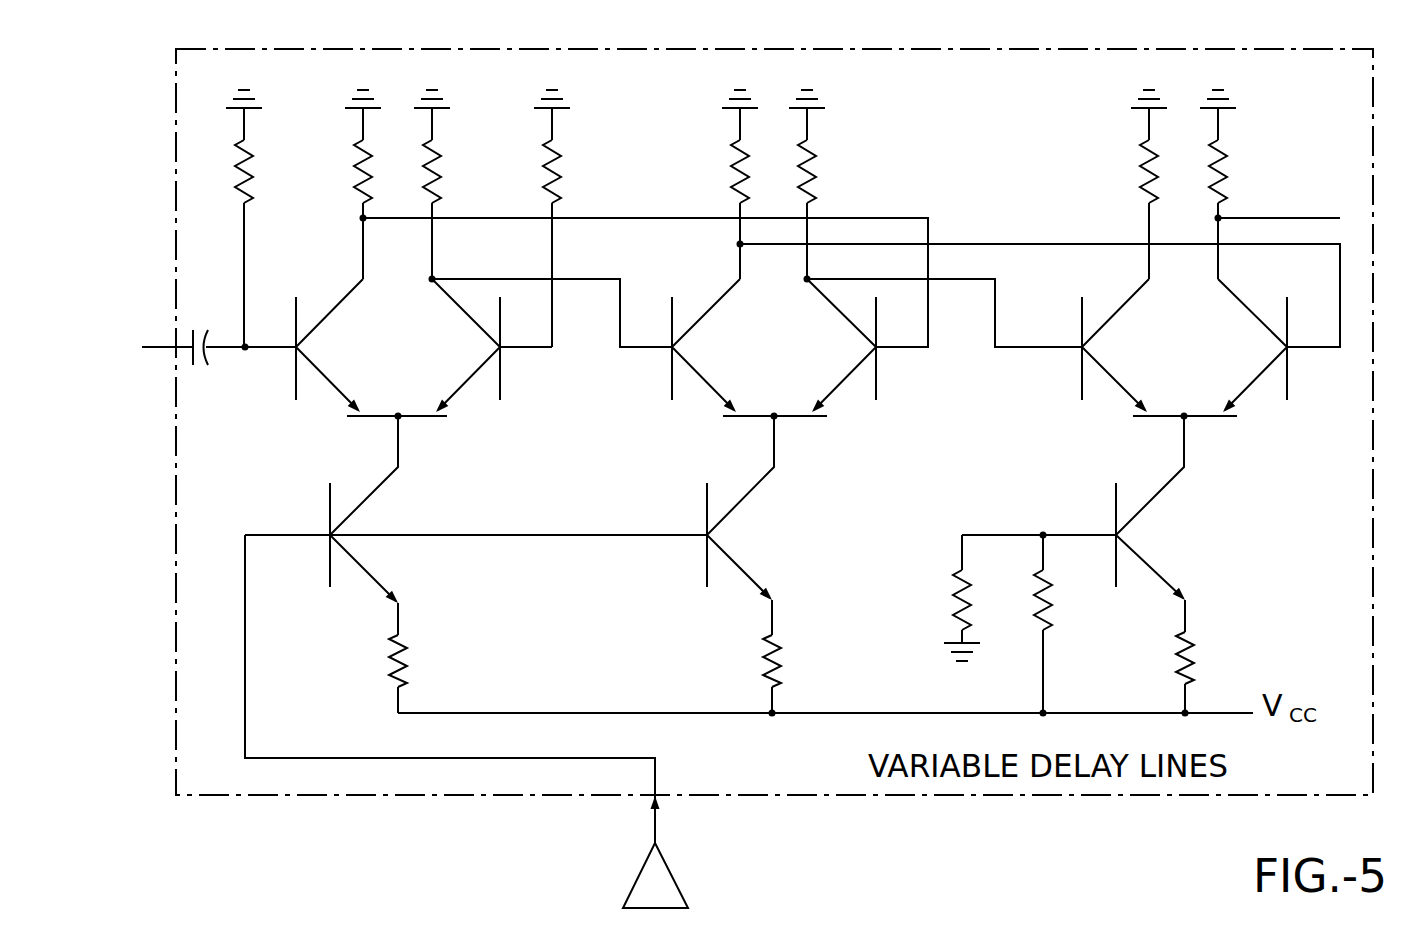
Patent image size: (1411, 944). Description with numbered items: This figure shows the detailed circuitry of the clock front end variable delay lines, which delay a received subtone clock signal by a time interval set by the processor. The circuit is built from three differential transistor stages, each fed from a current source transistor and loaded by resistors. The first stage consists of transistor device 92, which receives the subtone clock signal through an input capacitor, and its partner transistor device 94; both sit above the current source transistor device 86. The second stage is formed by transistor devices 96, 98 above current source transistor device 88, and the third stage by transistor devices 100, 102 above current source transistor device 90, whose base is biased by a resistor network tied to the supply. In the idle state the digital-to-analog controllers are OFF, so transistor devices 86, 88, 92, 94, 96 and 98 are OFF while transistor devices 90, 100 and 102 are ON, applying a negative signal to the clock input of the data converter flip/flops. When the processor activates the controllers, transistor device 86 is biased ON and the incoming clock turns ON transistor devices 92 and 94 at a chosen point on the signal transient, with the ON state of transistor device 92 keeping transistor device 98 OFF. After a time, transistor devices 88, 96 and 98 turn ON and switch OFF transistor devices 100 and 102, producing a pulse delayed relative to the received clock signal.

The transistor device 86 is at (330, 502).
The transistor device 88 is at (707, 498).
The transistor device 90 is at (1115, 498).
The transistor device 92 is at (293, 377).
The transistor device 94 is at (502, 377).
The transistor device 96 is at (670, 377).
The transistor device 98 is at (878, 377).
The transistor device 100 is at (1079, 377).
The transistor device 102 is at (1289, 377).